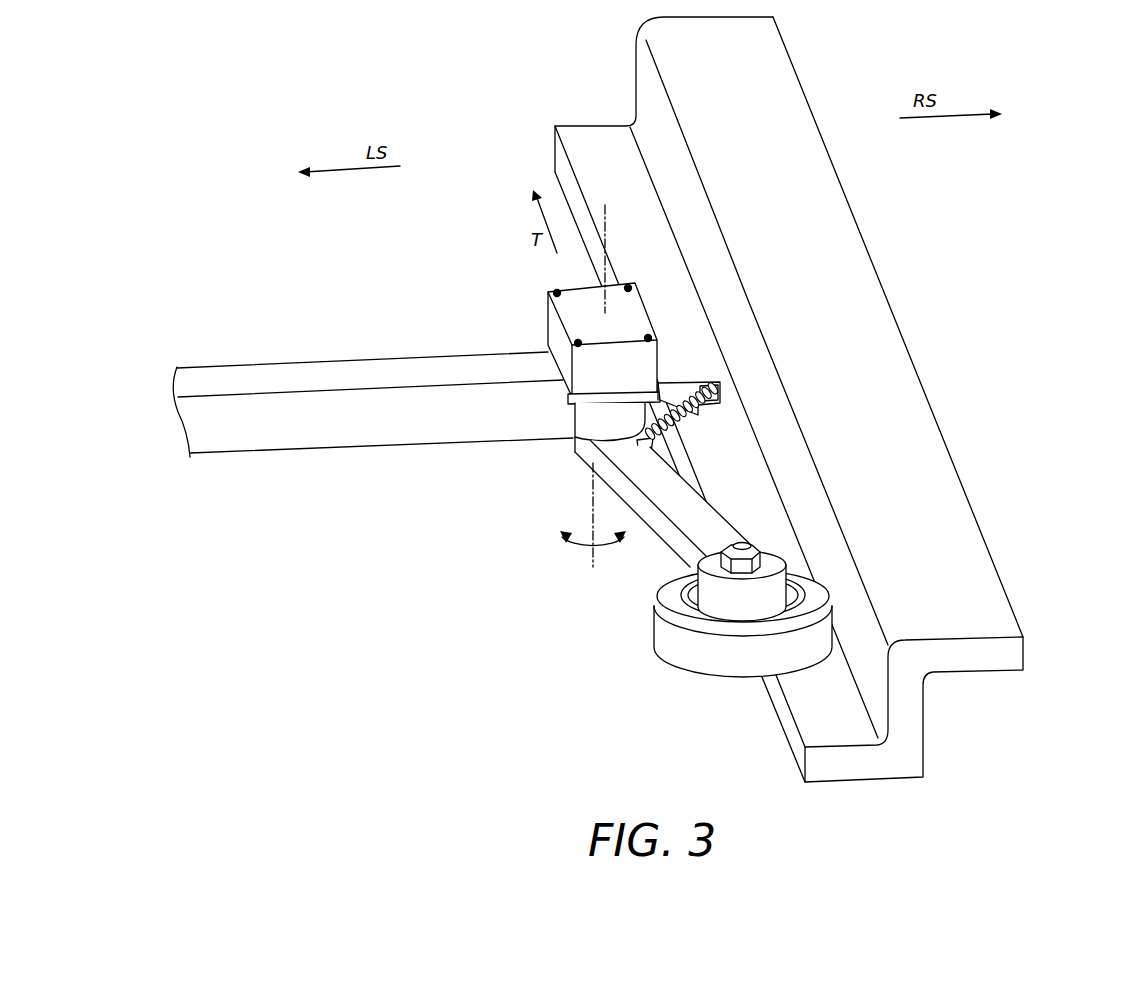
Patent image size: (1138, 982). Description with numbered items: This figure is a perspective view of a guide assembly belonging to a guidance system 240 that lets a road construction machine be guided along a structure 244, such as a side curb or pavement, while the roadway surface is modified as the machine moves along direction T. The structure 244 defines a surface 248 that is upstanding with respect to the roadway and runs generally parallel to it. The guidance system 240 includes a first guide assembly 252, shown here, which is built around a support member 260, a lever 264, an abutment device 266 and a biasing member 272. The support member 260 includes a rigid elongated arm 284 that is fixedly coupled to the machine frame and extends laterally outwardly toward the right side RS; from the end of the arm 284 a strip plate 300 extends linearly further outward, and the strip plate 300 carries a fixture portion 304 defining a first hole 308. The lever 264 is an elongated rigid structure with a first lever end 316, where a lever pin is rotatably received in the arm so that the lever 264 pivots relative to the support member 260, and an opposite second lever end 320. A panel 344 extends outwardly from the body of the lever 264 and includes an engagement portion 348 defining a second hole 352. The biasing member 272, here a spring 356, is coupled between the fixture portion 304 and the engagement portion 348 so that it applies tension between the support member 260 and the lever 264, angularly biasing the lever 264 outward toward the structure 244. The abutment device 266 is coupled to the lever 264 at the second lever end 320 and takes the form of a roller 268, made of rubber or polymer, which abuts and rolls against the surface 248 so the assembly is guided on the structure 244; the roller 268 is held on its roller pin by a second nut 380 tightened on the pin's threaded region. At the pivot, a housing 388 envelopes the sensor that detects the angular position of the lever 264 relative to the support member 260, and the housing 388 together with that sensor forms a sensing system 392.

The guidance system 240 is at (373, 416).
The structure 244 is at (775, 397).
The surface 248 is at (650, 95).
The first guide assembly 252 is at (373, 416).
The support member 260 is at (381, 493).
The lever 264 is at (838, 609).
The abutment device 266 is at (723, 658).
The roller 268 is at (706, 677).
The biasing member 272 is at (833, 376).
The arm 284 is at (290, 451).
The strip plate 300 is at (668, 392).
The fixture portion 304 is at (854, 361).
The first hole 308 is at (723, 403).
The first lever end 316 is at (573, 438).
The second lever end 320 is at (758, 595).
The panel 344 is at (588, 503).
The engagement portion 348 is at (562, 452).
The second hole 352 is at (645, 442).
The spring 356 is at (663, 432).
The second nut 380 is at (768, 562).
The housing 388 is at (548, 318).
The sensing system 392 is at (559, 304).